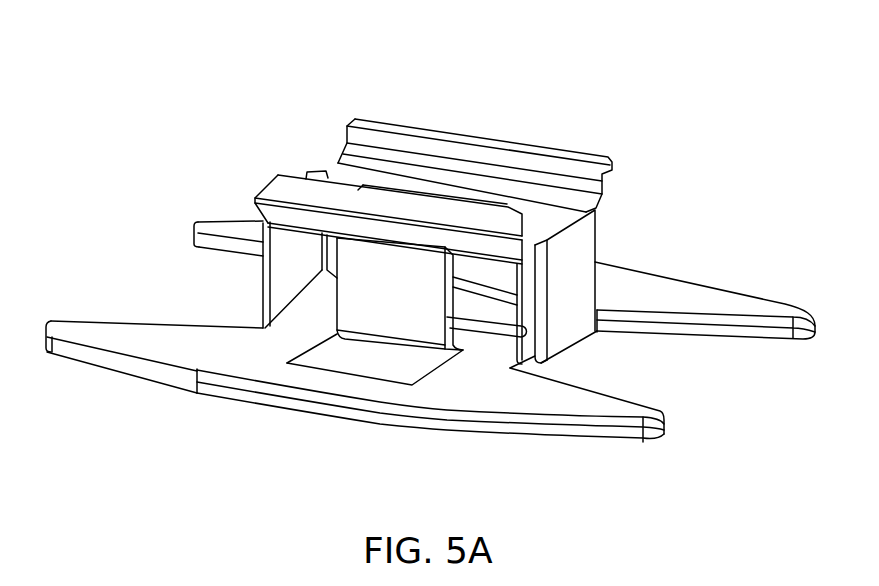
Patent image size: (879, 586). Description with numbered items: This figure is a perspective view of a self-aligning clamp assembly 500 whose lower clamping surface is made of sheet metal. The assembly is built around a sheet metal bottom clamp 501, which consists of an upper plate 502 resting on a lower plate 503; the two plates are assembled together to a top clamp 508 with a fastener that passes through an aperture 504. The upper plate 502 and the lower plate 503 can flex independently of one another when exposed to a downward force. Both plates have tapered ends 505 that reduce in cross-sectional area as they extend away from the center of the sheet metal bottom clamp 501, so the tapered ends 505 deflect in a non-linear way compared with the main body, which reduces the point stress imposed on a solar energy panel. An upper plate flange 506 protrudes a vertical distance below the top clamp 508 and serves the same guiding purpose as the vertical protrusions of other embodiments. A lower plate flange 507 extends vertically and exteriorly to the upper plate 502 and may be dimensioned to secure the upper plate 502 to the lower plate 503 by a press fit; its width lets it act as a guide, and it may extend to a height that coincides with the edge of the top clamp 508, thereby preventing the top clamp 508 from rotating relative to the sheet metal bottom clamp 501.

The clamp assembly 500 is at (181, 73).
The sheet metal bottom clamp 501 is at (84, 375).
The upper plate 502 is at (134, 336).
The lower plate 503 is at (257, 404).
The aperture 504 is at (478, 334).
The tapered ends 505 is at (589, 409).
The upper plate flange 506 is at (385, 293).
The lower plate flange 507 is at (575, 275).
The top clamp 508 is at (591, 214).